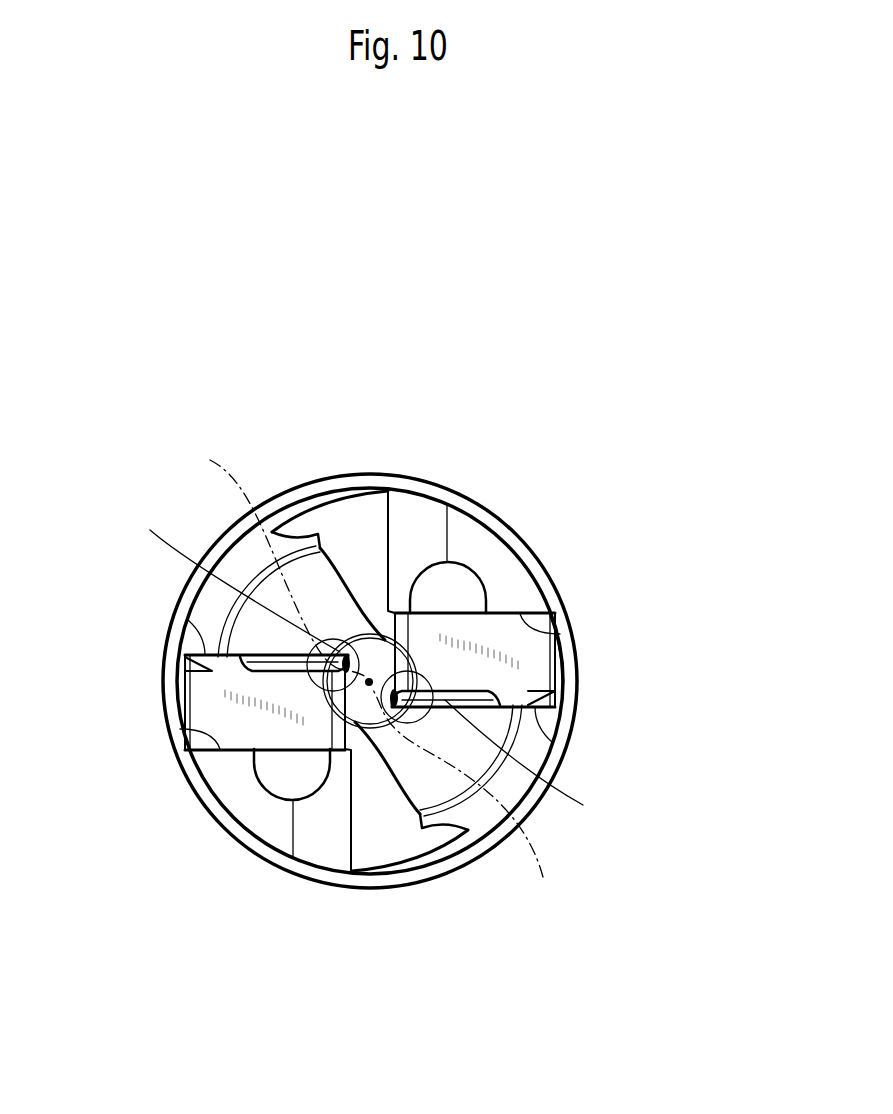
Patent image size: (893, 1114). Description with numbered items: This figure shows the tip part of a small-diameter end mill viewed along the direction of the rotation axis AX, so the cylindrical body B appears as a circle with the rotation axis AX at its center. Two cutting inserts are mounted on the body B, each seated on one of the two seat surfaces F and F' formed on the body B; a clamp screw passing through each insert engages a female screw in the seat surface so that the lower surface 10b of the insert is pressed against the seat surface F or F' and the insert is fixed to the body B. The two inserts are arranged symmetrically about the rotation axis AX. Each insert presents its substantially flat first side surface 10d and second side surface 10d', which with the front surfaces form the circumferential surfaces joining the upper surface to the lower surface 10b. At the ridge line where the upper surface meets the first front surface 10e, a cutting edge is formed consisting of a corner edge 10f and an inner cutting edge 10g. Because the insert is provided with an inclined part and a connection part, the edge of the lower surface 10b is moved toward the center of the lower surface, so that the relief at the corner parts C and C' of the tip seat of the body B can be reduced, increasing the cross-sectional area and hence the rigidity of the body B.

The body B is at (537, 555).
The rotation axis AX is at (369, 688).
The corner part C is at (463, 798).
The corner part C' is at (275, 558).
The seat surface F is at (522, 767).
The seat surface F' is at (233, 579).
The lower surface 10b is at (548, 727).
The first side surface 10d is at (370, 627).
The second side surface 10d' is at (628, 653).
The first front surface 10e is at (200, 713).
The corner edge 10f is at (543, 633).
The inner cutting edge 10g is at (438, 613).